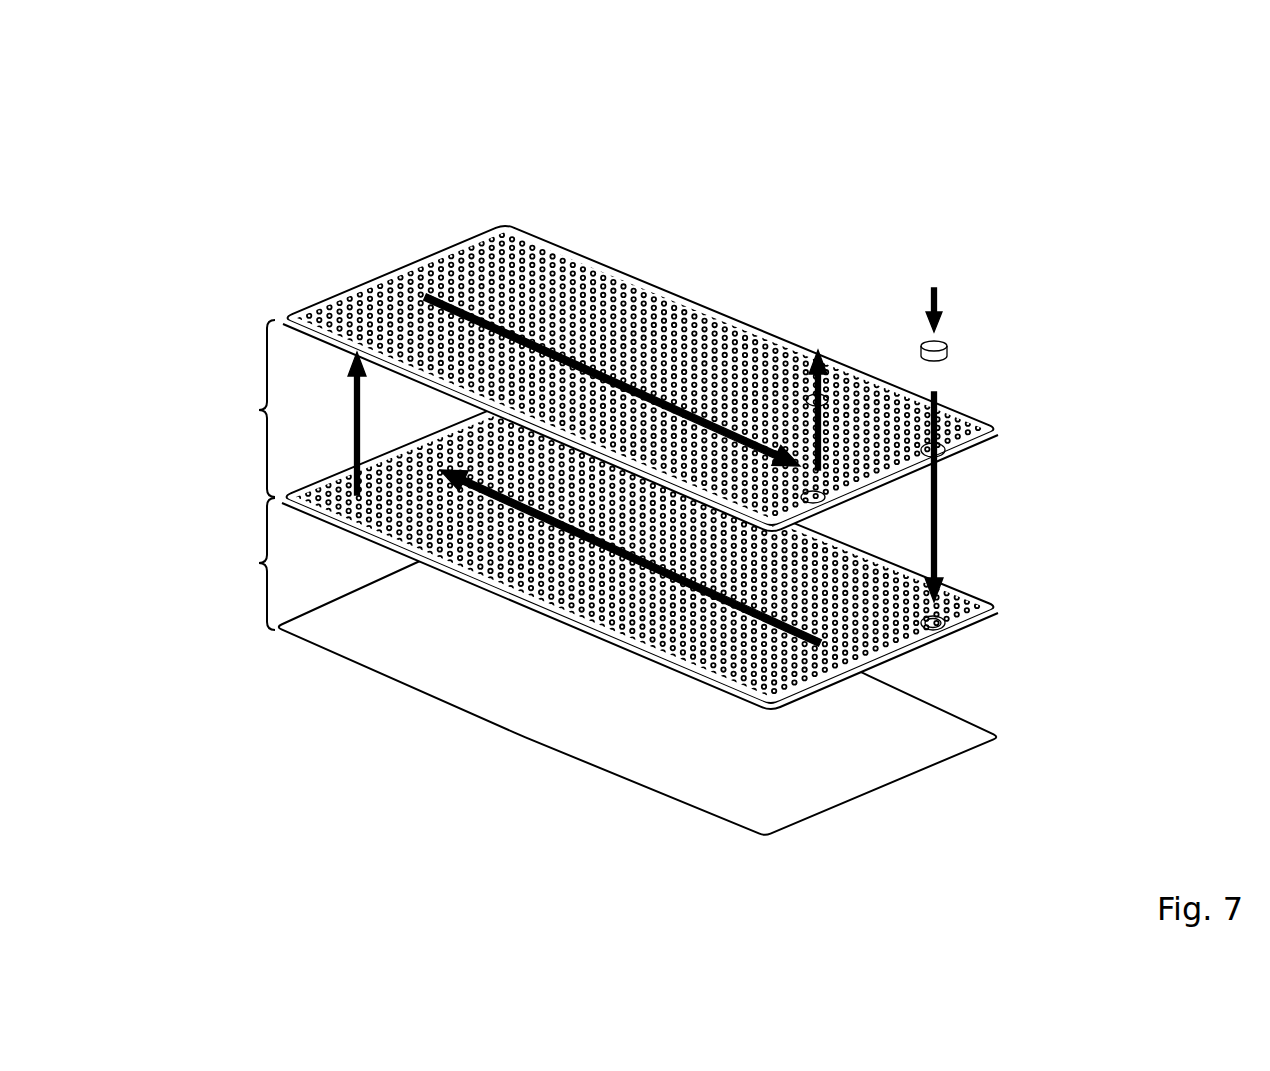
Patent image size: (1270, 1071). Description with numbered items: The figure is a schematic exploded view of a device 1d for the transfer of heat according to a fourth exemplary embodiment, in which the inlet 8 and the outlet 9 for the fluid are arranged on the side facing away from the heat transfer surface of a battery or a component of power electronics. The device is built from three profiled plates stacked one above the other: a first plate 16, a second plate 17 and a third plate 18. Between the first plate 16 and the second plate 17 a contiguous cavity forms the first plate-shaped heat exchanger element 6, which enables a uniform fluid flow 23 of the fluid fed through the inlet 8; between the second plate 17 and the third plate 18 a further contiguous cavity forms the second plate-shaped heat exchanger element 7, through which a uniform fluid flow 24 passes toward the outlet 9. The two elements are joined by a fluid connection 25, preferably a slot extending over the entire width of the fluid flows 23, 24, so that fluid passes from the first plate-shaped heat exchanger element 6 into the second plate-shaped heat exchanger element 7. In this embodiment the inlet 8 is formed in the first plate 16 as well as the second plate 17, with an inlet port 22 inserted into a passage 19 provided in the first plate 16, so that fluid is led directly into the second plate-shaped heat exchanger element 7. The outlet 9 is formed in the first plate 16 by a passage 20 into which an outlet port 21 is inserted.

The device 1d is at (942, 150).
The first plate 16 is at (651, 375).
The outlet port 21 is at (807, 377).
The fluid flow 24 is at (605, 365).
The outlet 9 is at (822, 350).
The inlet 8 is at (933, 427).
The inlet port 22 is at (957, 344).
The passage 19 is at (958, 458).
The fluid connection 25 is at (354, 420).
The first plate-shaped heat exchanger element 6 is at (257, 410).
The second plate-shaped heat exchanger element 7 is at (257, 563).
The second plate 17 is at (706, 642).
The fluid flow 23 is at (548, 600).
The passage 20 is at (863, 670).
The third plate 18 is at (650, 825).